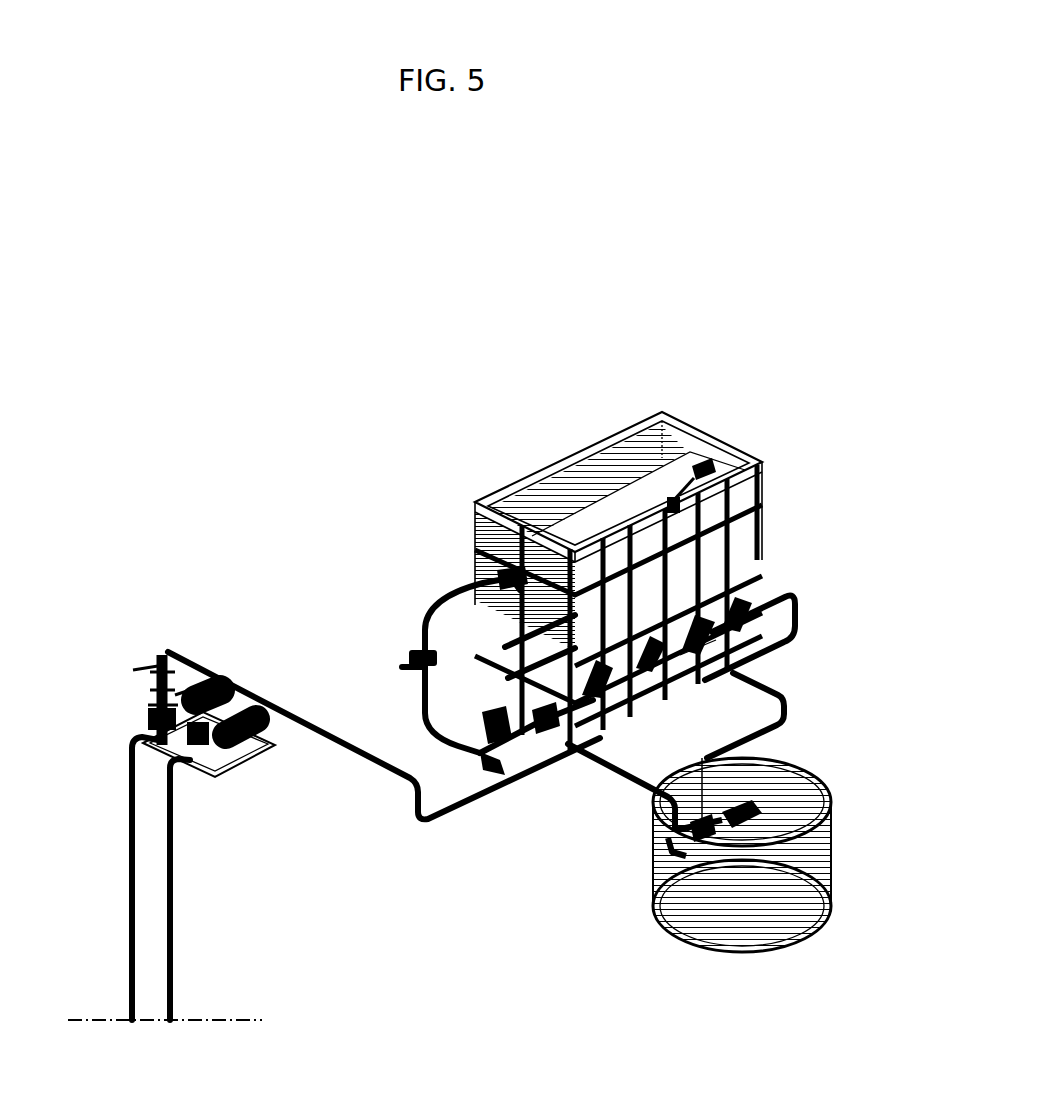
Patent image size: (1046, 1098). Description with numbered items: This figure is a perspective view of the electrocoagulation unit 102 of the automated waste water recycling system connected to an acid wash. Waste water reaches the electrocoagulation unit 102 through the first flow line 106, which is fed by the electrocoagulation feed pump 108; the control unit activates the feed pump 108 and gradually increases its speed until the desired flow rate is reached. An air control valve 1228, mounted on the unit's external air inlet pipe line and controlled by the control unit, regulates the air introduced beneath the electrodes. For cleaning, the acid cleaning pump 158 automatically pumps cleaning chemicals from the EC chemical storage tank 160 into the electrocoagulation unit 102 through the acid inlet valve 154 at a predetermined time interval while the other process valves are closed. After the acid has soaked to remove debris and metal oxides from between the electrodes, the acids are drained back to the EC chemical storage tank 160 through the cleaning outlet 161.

The electrocoagulation unit 102 is at (492, 477).
The air control valve 1228 is at (674, 499).
The first flow line 106 is at (348, 745).
The electrocoagulation feed pump 108 is at (148, 707).
The acid inlet valve 154 is at (778, 686).
The acid cleaning pump 158 is at (768, 808).
The EC chemical storage tank 160 is at (808, 958).
The cleaning outlet 161 is at (628, 782).